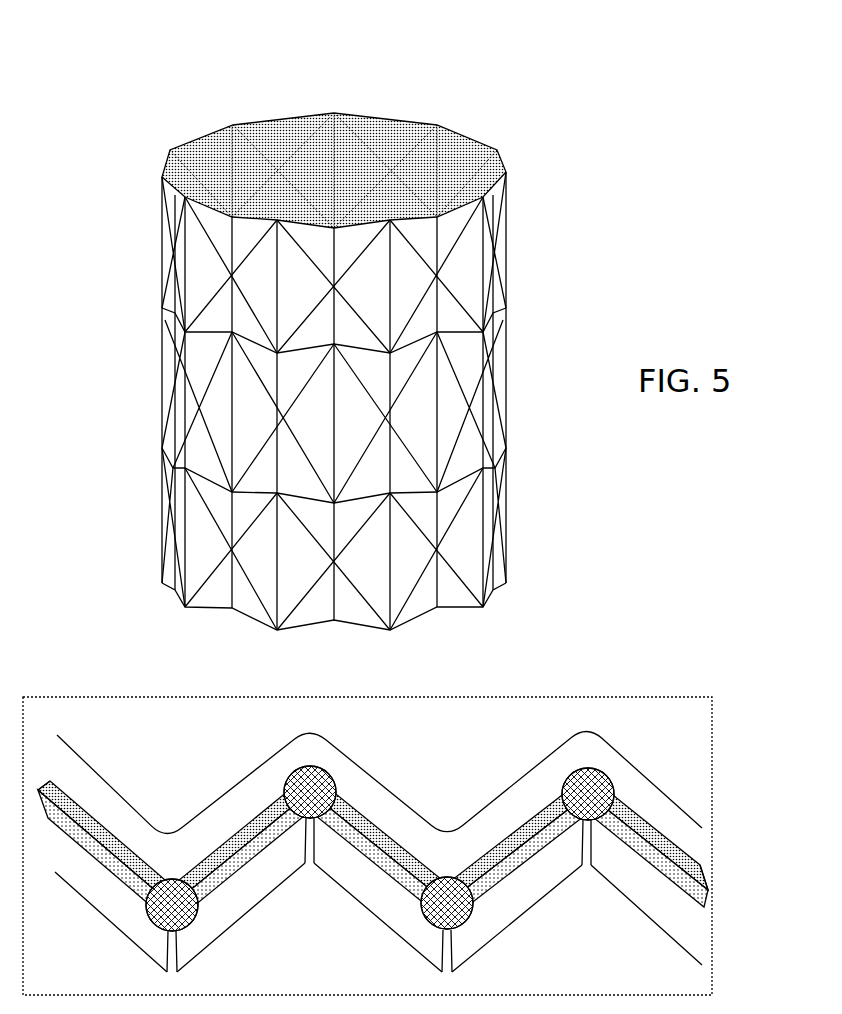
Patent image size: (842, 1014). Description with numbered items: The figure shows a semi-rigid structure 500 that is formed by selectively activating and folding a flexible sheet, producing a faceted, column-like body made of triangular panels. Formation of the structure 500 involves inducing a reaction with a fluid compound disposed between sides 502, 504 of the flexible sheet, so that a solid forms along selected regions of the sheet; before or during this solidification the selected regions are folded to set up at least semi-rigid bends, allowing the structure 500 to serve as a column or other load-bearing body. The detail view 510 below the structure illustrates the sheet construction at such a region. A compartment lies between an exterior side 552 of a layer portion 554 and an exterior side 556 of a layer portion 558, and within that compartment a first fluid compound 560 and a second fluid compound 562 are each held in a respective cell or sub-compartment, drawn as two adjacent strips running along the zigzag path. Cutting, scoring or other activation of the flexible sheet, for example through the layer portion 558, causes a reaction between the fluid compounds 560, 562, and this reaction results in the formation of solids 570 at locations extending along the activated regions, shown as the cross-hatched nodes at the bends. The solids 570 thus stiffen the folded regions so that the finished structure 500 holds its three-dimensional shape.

The semi-rigid structure 500 is at (90, 66).
The side of the flexible sheet 502 is at (158, 336).
The side of the flexible sheet 504 is at (376, 130).
The detail view 510 is at (656, 697).
The exterior side of layer portion 552 is at (502, 784).
The layer portion 554 is at (153, 864).
The exterior side of layer portion 556 is at (511, 937).
The layer portion 558 is at (591, 864).
The first fluid compound 560 is at (225, 840).
The second fluid compound 562 is at (234, 882).
The solids 570 is at (605, 805).